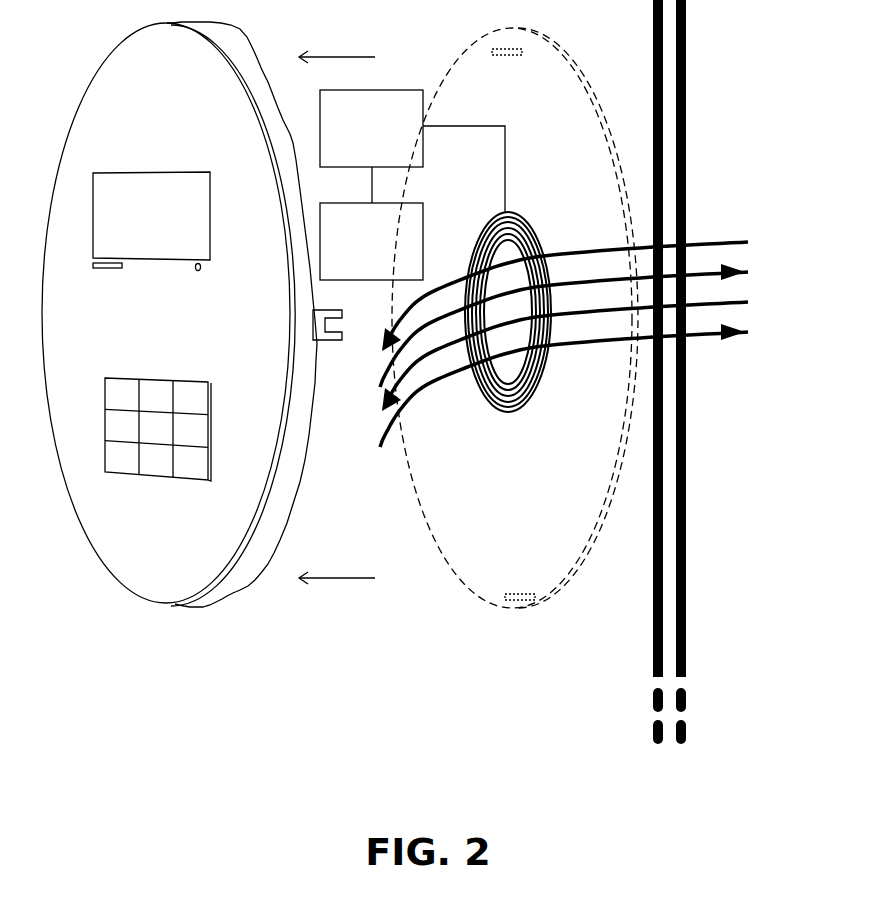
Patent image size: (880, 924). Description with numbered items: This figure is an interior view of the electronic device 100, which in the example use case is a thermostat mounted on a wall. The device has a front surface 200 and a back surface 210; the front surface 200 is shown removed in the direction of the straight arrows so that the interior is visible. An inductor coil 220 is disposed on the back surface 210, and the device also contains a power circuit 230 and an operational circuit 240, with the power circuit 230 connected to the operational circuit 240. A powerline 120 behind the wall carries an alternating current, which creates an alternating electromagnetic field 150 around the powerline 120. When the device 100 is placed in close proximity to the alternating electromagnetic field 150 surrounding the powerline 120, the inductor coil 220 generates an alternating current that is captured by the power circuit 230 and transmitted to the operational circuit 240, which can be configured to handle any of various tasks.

The electronic device 100 is at (331, 690).
The powerline 120 is at (688, 72).
The alternating electromagnetic field 150 is at (697, 337).
The front surface 200 is at (135, 575).
The back surface 210 is at (506, 572).
The inductor coil 220 is at (520, 213).
The power circuit 230 is at (358, 160).
The operational circuit 240 is at (358, 273).